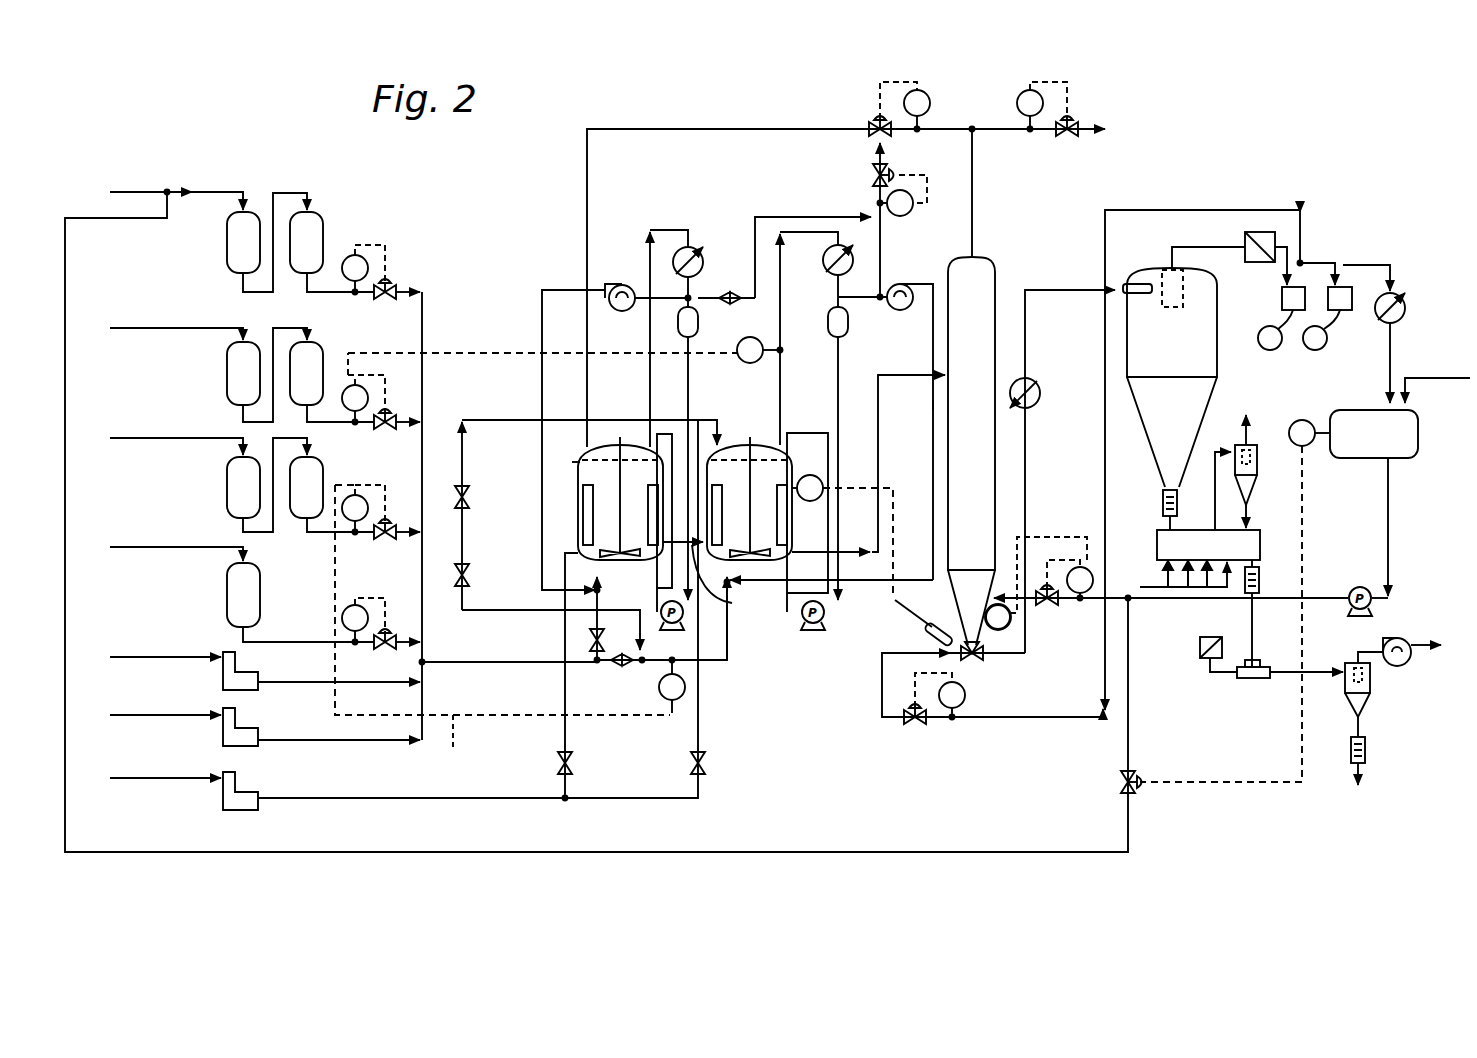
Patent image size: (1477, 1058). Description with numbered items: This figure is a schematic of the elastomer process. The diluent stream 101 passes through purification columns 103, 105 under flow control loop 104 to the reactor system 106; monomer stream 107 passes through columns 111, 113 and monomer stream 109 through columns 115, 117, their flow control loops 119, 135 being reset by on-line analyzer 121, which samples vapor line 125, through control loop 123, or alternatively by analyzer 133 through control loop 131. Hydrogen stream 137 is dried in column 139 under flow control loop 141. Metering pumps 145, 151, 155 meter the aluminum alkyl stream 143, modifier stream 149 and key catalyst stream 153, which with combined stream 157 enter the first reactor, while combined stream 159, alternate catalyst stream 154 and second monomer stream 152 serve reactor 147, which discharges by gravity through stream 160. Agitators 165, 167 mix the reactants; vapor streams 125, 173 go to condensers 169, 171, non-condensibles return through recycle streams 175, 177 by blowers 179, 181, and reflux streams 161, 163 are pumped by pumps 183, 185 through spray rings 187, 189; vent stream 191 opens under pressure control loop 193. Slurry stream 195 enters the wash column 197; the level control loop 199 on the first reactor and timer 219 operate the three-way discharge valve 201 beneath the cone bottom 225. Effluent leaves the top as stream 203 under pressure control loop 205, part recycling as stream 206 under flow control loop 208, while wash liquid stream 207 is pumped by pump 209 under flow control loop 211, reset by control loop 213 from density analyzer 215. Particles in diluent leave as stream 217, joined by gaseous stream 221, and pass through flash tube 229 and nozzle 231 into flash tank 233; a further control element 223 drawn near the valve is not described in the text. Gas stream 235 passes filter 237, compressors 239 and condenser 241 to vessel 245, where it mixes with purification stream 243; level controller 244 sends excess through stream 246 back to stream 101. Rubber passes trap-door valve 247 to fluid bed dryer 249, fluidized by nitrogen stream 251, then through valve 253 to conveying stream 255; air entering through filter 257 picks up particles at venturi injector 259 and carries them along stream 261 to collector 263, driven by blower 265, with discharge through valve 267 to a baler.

The diluent or solvent stream 101 is at (205, 192).
The purification column 103 is at (227, 250).
The flow control loop 104 is at (386, 246).
The purification column 105 is at (323, 214).
The reactor system 106 is at (520, 497).
The monomer stream 107 is at (155, 328).
The monomer stream 109 is at (155, 438).
The purification column 111 is at (227, 372).
The purification column 113 is at (315, 345).
The purification column 115 is at (227, 487).
The purification column 117 is at (318, 475).
The flow control loop 119 is at (405, 378).
The on-line process analyzer 121 is at (750, 337).
The control loop 123 is at (508, 353).
The vapor line 125 is at (780, 372).
The control loop 131 is at (502, 625).
The on-line analyzer 133 is at (659, 688).
The flow control loop 135 is at (388, 485).
The hydrogen stream 137 is at (155, 547).
The drying column 139 is at (227, 590).
The flow control loop 141 is at (388, 598).
The aluminum alkyl catalyst component stream 143 is at (155, 657).
The metering pump 145 is at (250, 672).
The reactor 147 is at (572, 462).
The modifier stream 149 is at (155, 715).
The metering pump 151 is at (252, 730).
The second monomer stream 152 is at (505, 420).
The key catalyst component stream 153 is at (155, 778).
The alternate key catalyst component stream 154 is at (565, 693).
The metering pump 155 is at (256, 792).
The combined stream 157 is at (727, 668).
The combined stream 159 is at (592, 617).
The discharge stream 160 is at (812, 586).
The liquid reflux stream 161 is at (843, 378).
The liquid reflux stream 163 is at (688, 365).
The agitator 165 is at (770, 566).
The agitator 167 is at (640, 560).
The condenser 169 is at (830, 275).
The condenser 171 is at (700, 247).
The vapor stream 173 is at (670, 230).
The recycle stream 175 is at (933, 408).
The recycle stream 177 is at (555, 290).
The blower 179 is at (905, 284).
The blower 181 is at (615, 284).
The pump 183 is at (803, 622).
The pump 185 is at (663, 622).
The spray ring 187 is at (749, 460).
The spray ring 189 is at (620, 460).
The vent stream 191 is at (875, 162).
The pressure control loop 193 is at (905, 175).
The slurry stream 195 is at (878, 425).
The wash column 197 is at (995, 452).
The level control loop 199 is at (808, 476).
The discharge valve 201 is at (975, 661).
The effluent stream 203 is at (972, 190).
The pressure control loop 205 is at (1068, 82).
The recycle stream 206 is at (757, 129).
The wash liquid stream 207 is at (1285, 600).
The flow control loop 208 is at (880, 82).
The pump 209 is at (1350, 608).
The flow control loop 211 is at (1067, 548).
The control loop 213 is at (1017, 537).
The density analyzer 215 is at (1010, 630).
The bottoms stream 217 is at (1025, 490).
The open-closed position timer 219 is at (930, 633).
The gaseous recycle stream 221 is at (1195, 210).
The control valve 223 is at (915, 673).
The cone bottom 225 is at (955, 595).
The flash tube 229 is at (1040, 393).
The nozzle 231 is at (1128, 284).
The flash tank 233 is at (1172, 377).
The gas stream 235 is at (1205, 247).
The filter 237 is at (1247, 262).
The compressors 239 is at (1280, 348).
The condenser 241 is at (1405, 320).
The purification stream 243 is at (1465, 378).
The level control loop 244 is at (1308, 421).
The vessel 245 is at (1374, 504).
The recycle stream 246 is at (905, 852).
The double trap door type valve 247 is at (1163, 500).
The fluid bed dryer 249 is at (1208, 487).
The nitrogen stream 251 is at (1148, 587).
The double trap door type valve 253 is at (1262, 580).
The conveying stream 255 is at (1247, 616).
The filter 257 is at (1200, 650).
The venturi injector 259 is at (1247, 680).
The conveying stream 261 is at (1290, 680).
The cyclonic separation-collector 263 is at (1372, 683).
The blower 265 is at (1397, 640).
The double trap door type valve 267 is at (1368, 750).